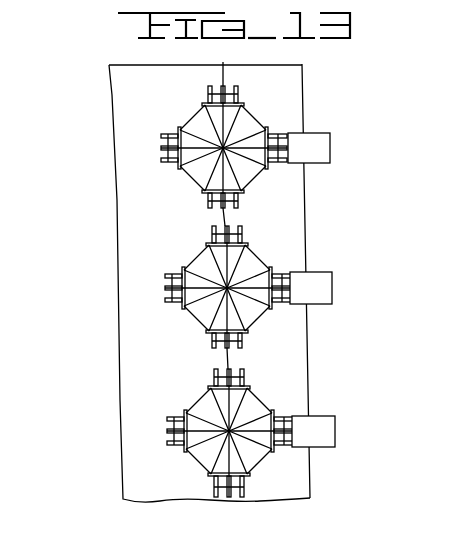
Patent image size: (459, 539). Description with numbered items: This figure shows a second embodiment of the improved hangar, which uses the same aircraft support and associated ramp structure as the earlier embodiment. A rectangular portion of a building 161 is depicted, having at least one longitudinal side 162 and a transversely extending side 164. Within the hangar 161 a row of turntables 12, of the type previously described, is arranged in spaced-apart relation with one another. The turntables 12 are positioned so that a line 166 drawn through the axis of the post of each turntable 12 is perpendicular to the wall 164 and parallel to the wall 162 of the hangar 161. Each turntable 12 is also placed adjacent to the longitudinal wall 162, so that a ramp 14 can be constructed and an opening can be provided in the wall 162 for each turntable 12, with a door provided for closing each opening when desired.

The turntable 12 is at (242, 93).
The ramp 14 is at (328, 135).
The building 161 is at (161, 65).
The longitudinal side 162 is at (310, 482).
The transversely extending side 164 is at (262, 63).
The line 166 is at (223, 218).